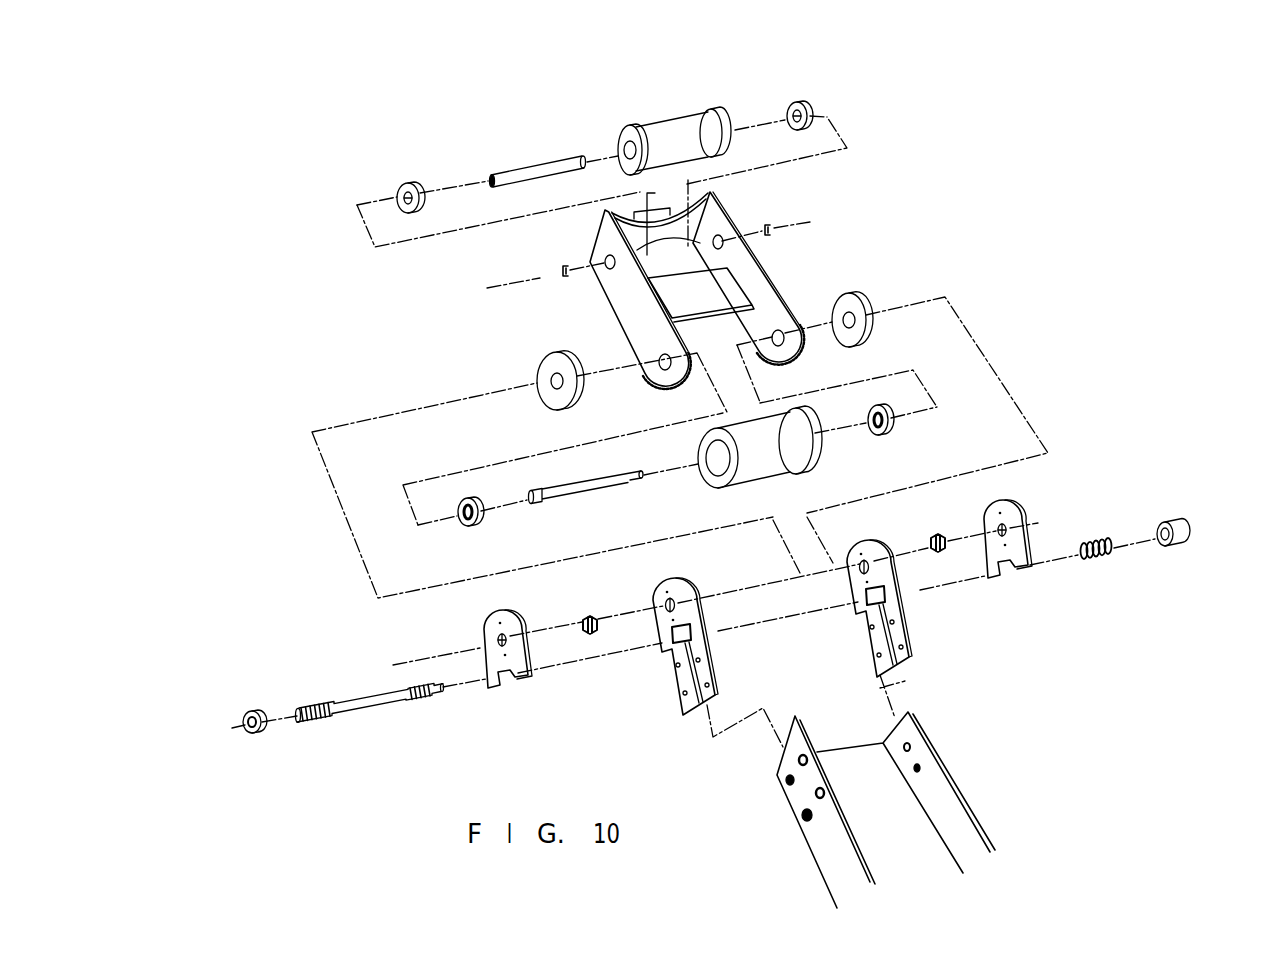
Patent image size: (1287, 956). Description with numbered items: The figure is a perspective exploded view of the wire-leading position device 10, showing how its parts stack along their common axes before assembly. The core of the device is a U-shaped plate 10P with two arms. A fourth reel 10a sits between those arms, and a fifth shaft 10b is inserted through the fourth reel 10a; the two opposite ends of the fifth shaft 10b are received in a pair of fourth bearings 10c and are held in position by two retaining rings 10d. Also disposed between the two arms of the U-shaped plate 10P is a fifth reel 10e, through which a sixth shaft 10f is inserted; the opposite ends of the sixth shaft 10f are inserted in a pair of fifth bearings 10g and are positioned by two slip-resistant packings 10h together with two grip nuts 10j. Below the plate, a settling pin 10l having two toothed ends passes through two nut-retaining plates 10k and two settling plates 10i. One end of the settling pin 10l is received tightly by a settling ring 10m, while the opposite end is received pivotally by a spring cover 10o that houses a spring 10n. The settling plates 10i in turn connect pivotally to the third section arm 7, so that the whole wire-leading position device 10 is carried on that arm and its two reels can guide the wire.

The wire-leading position device 10 is at (773, 295).
The U-shaped plate 10P is at (645, 212).
The fourth reel 10a is at (687, 130).
The fifth shaft 10b is at (530, 172).
The fourth bearings 10c is at (400, 190).
The retaining rings 10d is at (560, 268).
The fifth reel 10e is at (815, 463).
The sixth shaft 10f is at (593, 487).
The fifth bearings 10g is at (463, 527).
The slip-resistant packings 10h is at (538, 367).
The settling plates 10i is at (672, 677).
The grip nuts 10j is at (583, 620).
The nut-retaining plates 10k is at (490, 688).
The settling pin 10l is at (358, 693).
The settling ring 10m is at (250, 710).
The spring 10n is at (1105, 537).
The spring cover 10o is at (1180, 525).
The third section arm 7 is at (940, 788).